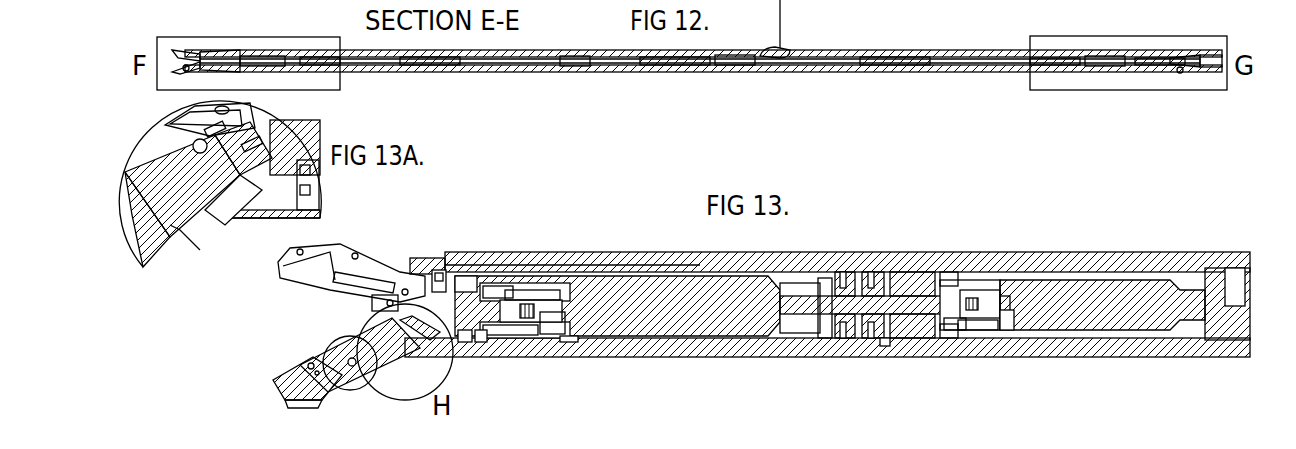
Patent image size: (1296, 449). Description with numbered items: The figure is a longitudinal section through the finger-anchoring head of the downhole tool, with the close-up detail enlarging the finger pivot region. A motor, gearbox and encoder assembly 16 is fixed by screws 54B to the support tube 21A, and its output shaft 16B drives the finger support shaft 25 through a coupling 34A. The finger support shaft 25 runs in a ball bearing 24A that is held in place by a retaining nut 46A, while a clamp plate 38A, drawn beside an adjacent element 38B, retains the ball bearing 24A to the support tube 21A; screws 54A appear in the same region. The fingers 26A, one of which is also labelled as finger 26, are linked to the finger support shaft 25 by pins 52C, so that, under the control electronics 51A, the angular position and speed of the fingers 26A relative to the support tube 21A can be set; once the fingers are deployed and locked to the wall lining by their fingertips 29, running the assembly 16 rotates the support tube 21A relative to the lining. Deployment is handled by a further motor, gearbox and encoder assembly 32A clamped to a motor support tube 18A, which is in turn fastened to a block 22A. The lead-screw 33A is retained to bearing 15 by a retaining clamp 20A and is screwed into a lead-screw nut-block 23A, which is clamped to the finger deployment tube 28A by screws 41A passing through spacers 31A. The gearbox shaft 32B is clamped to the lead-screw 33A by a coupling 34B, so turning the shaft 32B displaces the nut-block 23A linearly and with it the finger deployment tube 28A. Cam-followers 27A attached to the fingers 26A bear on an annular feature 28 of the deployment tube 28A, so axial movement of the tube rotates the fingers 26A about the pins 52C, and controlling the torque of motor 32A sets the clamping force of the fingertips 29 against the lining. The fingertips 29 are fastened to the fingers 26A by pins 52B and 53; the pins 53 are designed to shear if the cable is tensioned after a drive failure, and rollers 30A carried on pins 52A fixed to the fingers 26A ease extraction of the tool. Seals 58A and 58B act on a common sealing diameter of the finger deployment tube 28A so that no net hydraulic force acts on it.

In FIG. 13, the bearing 15 is at (948, 278).
In FIG. 13, the motor, gearbox and encoder assembly 16 is at (630, 270).
In FIG. 13, the output shaft 16B is at (560, 330).
In FIG. 13, the motor support tube 18A is at (962, 326).
In FIG. 13, the retaining clamp 20A is at (952, 336).
In FIG. 13, the support tube 21A is at (1160, 252).
In FIG. 13, the block 22A is at (900, 326).
In FIG. 13, the lead-screw nut-block 23A is at (832, 336).
In FIG. 13, the ball bearing 24A is at (490, 340).
In FIG. 13, the finger support shaft 25 is at (402, 264).
In FIG. 13, the lower jaw 26 is at (352, 340).
In FIG. 13A, the fingers 26A is at (150, 166).
In FIG. 13A, the cam-followers 27A is at (243, 198).
In FIG. 13A, the annular feature 28 is at (220, 212).
In FIG. 13, the finger deployment tube 28A is at (650, 254).
In FIG. 13, the fingertips 29 is at (318, 404).
In FIG. 13, the rollers 30A is at (362, 392).
In FIG. 13, the spacers 31A is at (838, 266).
In FIG. 13, the motor, gearbox and encoder assembly 32A is at (1066, 280).
In FIG. 13, the gearbox shaft 32B is at (1006, 322).
In FIG. 13, the lead-screw 33A is at (912, 290).
In FIG. 13, the coupling 34A is at (538, 292).
In FIG. 13, the coupling 34B is at (976, 292).
In FIG. 13, the clamp plate 38A is at (462, 282).
In FIG. 13, the link pin 38B is at (438, 278).
In FIG. 13, the screws 41A is at (868, 250).
In FIG. 13, the retaining nut 46A is at (495, 288).
In FIG. 13, the control electronics 51A is at (1226, 268).
In FIG. 13, the pins 52A is at (343, 358).
In FIG. 13, the pins 52B is at (303, 362).
In FIG. 13A, the pins 52C is at (222, 137).
In FIG. 13, the pins 52C is at (383, 298).
In FIG. 13, the pins 53 is at (315, 380).
In FIG. 13, the washer 54A is at (467, 350).
In FIG. 13, the screws 54B is at (570, 342).
In FIG. 13, the seals 58A is at (484, 350).
In FIG. 13, the seals 58B is at (882, 348).